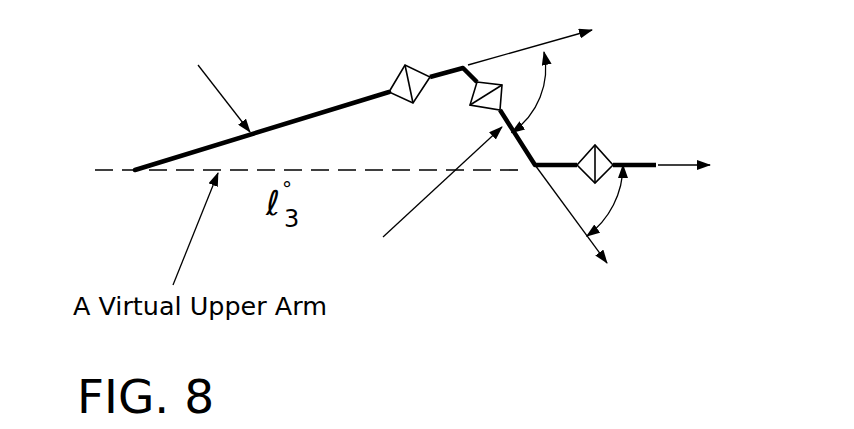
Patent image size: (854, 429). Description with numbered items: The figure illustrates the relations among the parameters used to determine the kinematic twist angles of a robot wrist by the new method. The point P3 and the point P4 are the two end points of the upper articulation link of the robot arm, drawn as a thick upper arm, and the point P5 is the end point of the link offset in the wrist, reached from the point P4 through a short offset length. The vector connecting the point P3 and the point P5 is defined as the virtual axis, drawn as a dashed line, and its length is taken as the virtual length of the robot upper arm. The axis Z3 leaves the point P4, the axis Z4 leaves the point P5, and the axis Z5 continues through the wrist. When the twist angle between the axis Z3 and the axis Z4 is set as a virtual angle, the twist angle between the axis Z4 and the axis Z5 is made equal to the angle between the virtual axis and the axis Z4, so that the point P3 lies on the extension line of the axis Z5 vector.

The point P3 is at (254, 122).
The point P4 is at (445, 69).
The point P5 is at (473, 190).
The axis Z3 is at (551, 69).
The axis Z4 is at (621, 224).
The axis Z5 is at (684, 168).